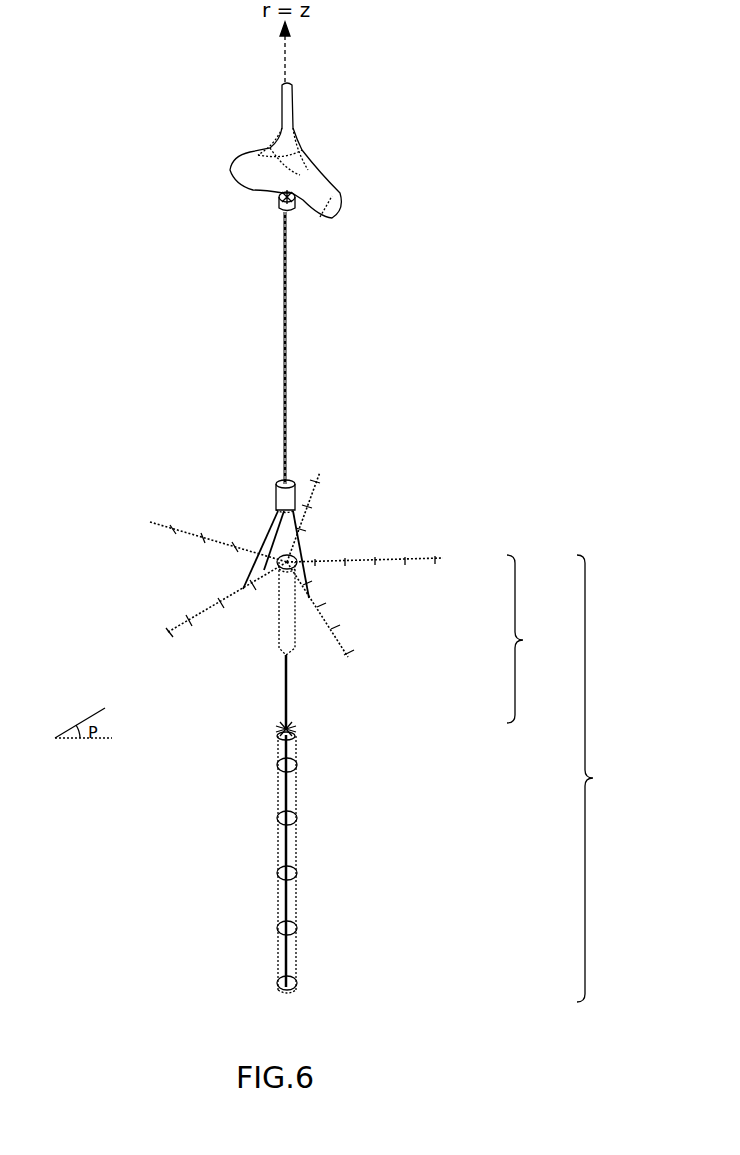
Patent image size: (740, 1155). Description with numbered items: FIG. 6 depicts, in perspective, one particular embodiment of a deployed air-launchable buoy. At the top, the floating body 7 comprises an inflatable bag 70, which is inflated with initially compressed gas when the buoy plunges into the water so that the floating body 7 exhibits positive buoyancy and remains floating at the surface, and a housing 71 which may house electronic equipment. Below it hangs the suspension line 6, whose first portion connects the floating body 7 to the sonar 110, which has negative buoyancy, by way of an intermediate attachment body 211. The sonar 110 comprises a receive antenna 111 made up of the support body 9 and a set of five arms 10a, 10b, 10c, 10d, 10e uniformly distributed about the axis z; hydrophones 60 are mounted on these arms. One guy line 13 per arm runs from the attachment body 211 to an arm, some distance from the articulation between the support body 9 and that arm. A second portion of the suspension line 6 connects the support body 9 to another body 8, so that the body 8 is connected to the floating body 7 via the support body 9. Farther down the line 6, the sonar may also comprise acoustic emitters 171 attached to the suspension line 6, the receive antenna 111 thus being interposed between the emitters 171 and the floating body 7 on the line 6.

The suspension line 6 is at (288, 373).
The floating body 7 is at (207, 143).
The body 8 is at (272, 735).
The support body 9 is at (280, 606).
The arm 10a is at (176, 622).
The arm 10b is at (168, 528).
The arm 10c is at (312, 488).
The arm 10d is at (424, 558).
The arm 10e is at (340, 642).
The guy line 13 is at (262, 545).
The hydrophones 60 is at (222, 597).
The inflatable bag 70 is at (282, 120).
The housing 71 is at (280, 203).
The sonar 110 is at (608, 778).
The receive antenna 111 is at (538, 639).
The acoustic emitters 171 is at (297, 765).
The attachment body 211 is at (272, 500).